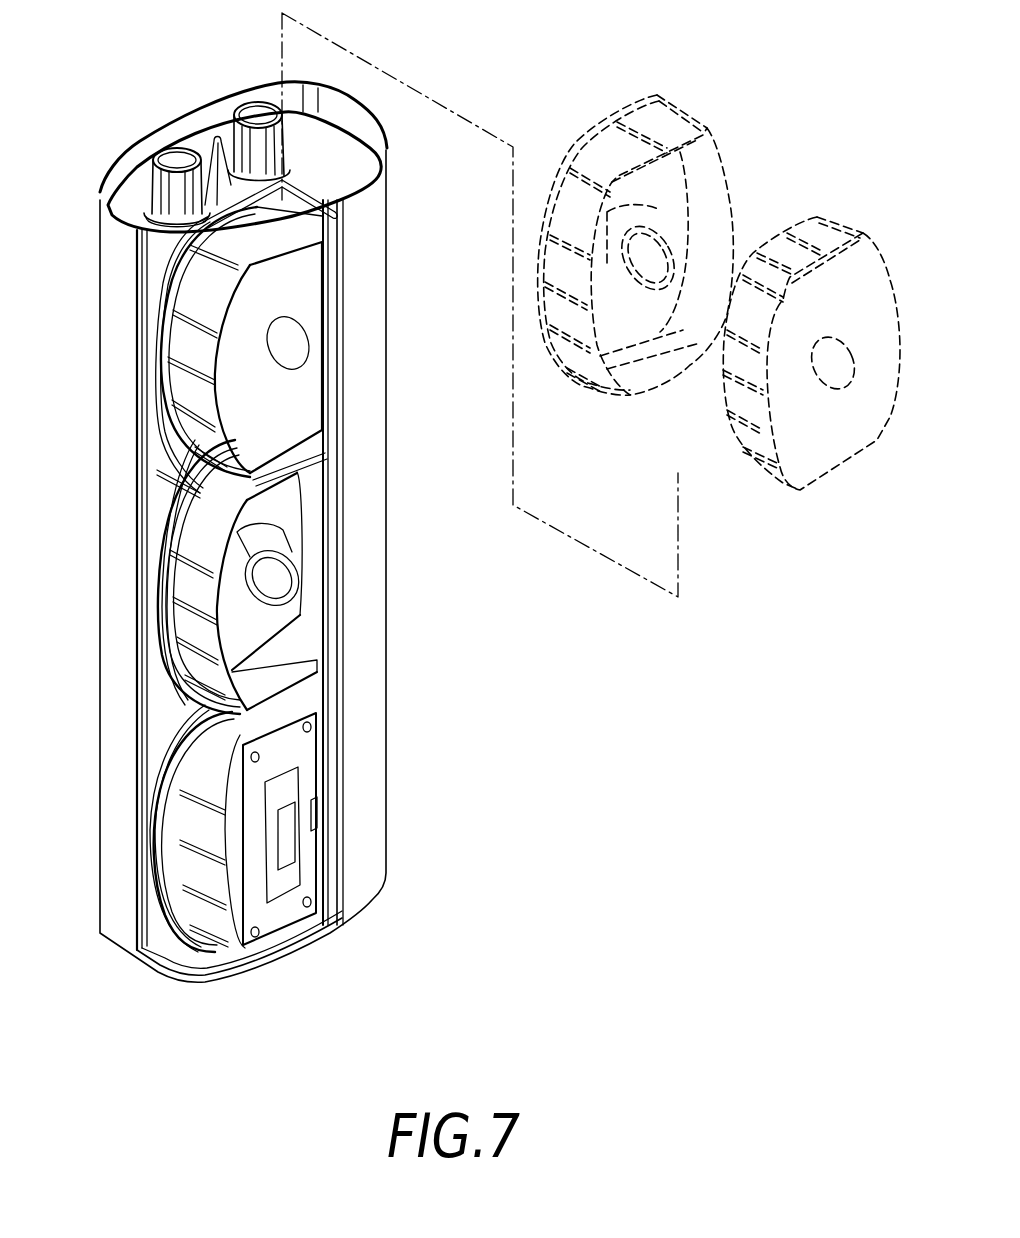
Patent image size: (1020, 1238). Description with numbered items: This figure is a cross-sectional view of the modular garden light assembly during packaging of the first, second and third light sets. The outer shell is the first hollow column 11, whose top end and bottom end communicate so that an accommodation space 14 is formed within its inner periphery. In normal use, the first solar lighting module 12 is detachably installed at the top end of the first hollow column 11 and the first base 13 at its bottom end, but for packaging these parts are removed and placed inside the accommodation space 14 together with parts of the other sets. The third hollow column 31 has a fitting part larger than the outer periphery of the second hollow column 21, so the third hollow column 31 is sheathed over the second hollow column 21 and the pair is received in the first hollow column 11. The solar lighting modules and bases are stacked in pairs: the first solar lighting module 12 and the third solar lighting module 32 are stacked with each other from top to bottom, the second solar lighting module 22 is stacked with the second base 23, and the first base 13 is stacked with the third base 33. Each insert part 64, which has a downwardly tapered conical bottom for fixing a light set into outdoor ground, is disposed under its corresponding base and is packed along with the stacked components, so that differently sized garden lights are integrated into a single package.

The first hollow column 11 is at (315, 943).
The first solar lighting module 12 is at (300, 740).
The first base 13 is at (300, 413).
The accommodation space 14 is at (323, 180).
The second hollow column 21 is at (215, 975).
The second solar lighting module 22 is at (157, 443).
The second base 23 is at (312, 467).
The third hollow column 31 is at (160, 978).
The third solar lighting module 32 is at (157, 683).
The third base 33 is at (157, 370).
The insert part 64 is at (253, 100).